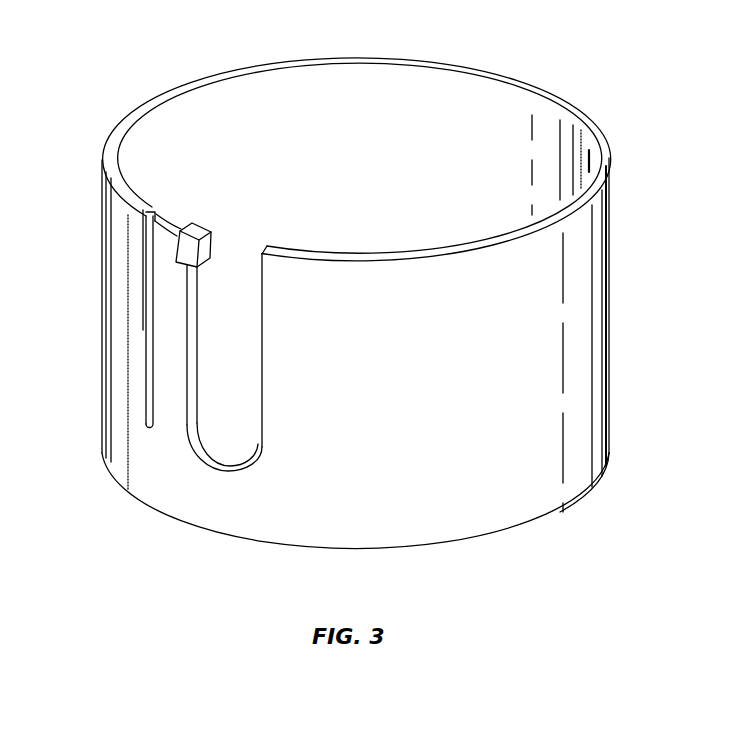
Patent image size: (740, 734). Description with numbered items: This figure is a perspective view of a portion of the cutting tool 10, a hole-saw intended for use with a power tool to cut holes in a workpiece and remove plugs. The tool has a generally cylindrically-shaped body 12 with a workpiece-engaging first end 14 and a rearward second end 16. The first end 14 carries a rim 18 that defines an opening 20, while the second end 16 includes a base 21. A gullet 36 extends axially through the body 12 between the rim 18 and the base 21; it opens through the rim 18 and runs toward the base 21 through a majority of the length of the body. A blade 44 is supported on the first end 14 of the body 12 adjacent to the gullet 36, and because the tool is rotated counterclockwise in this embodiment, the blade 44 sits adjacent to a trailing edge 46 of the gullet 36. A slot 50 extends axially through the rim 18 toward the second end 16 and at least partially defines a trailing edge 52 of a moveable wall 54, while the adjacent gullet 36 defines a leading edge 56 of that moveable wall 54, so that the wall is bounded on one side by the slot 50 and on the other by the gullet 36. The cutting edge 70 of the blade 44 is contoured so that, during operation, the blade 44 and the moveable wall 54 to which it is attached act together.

The cutting tool 10 is at (120, 54).
The body 12 is at (611, 320).
The first end 14 is at (598, 142).
The second end 16 is at (556, 515).
The rim 18 is at (110, 161).
The opening 20 is at (360, 76).
The base 21 is at (474, 549).
The gullet 36 is at (264, 398).
The blade 44 is at (203, 226).
The trailing edge 46 is at (191, 439).
The slot 50 is at (150, 211).
The trailing edge 52 is at (152, 282).
The moveable wall 54 is at (165, 360).
The leading edge 56 is at (192, 312).
The cutting edge 70 is at (209, 241).